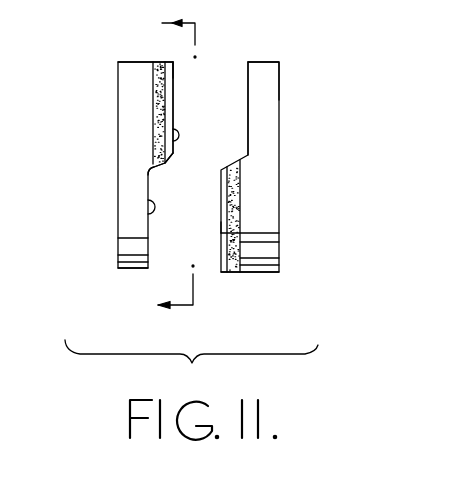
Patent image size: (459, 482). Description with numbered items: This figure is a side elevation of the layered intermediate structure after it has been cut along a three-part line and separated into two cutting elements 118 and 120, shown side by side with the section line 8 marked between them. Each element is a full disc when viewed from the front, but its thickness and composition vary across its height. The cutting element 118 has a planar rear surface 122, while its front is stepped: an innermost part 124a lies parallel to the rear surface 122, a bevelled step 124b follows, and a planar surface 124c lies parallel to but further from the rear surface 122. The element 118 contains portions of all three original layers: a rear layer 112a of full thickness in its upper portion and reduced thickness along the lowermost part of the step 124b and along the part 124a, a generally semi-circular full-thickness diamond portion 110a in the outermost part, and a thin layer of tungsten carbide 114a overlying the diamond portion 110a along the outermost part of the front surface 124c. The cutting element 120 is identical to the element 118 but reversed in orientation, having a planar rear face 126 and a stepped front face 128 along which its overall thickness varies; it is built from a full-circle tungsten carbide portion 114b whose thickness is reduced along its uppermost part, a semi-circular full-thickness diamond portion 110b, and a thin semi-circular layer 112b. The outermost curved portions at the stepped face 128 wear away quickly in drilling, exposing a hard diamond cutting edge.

The section line 8- 8 is at (166, 164).
The cutting element 118 is at (116, 169).
The cutting element 120 is at (281, 135).
The rear surface 122 is at (118, 73).
The planar rear face 126 is at (280, 97).
The portion of diamond layer 110a is at (160, 99).
The portion of diamond layer 110b is at (238, 206).
The rear layer 112a is at (132, 228).
The thin layer from tungsten carbide layer 112b is at (225, 232).
The thin layer of tungsten carbide 114a is at (173, 118).
The full circle portion of tungsten carbide layer 114b is at (263, 180).
The innermost part of front surface 124a is at (146, 204).
The bevelled step 124b is at (158, 171).
The planar surface 124c is at (170, 130).
The stepped front face 128 is at (173, 77).